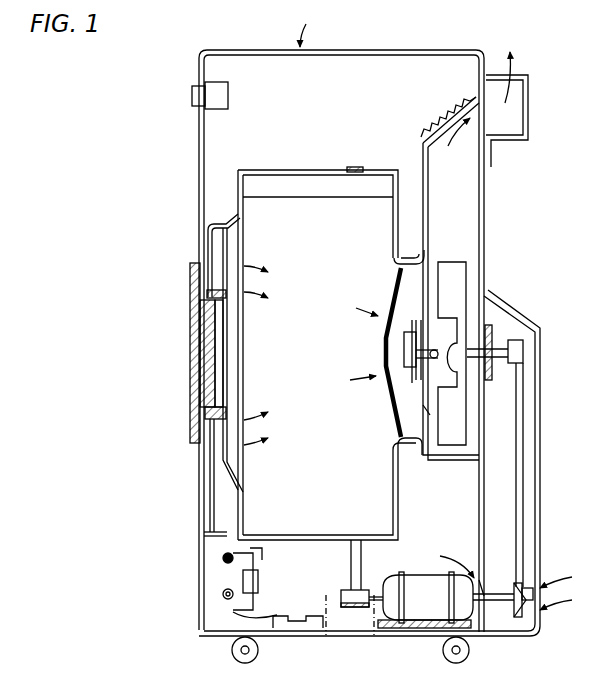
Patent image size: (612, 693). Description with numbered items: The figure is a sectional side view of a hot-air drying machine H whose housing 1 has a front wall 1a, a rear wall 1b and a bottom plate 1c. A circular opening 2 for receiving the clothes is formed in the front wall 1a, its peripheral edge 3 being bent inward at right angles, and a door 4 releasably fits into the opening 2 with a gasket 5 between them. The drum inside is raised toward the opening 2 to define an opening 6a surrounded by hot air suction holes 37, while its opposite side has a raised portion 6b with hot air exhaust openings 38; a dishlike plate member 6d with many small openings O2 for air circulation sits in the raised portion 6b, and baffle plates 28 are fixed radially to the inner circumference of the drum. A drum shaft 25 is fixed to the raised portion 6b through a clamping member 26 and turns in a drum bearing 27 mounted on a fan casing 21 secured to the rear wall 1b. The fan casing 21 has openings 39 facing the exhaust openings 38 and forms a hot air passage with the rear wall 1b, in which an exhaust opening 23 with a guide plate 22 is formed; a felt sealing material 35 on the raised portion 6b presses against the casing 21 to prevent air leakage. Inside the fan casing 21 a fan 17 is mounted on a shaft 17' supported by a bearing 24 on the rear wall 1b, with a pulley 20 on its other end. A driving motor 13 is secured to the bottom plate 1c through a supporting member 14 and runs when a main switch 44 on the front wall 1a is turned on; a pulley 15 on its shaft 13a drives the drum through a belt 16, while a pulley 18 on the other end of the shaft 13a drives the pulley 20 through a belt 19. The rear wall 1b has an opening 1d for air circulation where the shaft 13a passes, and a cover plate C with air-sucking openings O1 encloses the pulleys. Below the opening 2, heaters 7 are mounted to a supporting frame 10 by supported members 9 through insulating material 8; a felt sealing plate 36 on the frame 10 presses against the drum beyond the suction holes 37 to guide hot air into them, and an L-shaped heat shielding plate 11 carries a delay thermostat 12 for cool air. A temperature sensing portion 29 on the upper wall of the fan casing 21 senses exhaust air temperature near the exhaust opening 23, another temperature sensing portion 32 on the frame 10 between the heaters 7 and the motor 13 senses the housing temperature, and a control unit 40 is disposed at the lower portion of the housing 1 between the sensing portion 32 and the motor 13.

The housing 1 is at (358, 52).
The front wall 1a is at (200, 148).
The rear wall 1b is at (484, 200).
The bottom plate 1c is at (480, 637).
The opening 1d is at (491, 588).
The circular opening 2 is at (217, 347).
The peripheral edge 3 is at (195, 305).
The door 4 is at (192, 383).
The gasket 5 is at (212, 412).
The opening of drum 6a is at (232, 360).
The raised portion 6b is at (400, 458).
The plate member 6d is at (387, 327).
The heaters 7 is at (232, 612).
The insulating material 8 is at (226, 594).
The supported members 9 is at (226, 560).
The supporting frame 10 is at (222, 532).
The heat shielding plate 11 is at (258, 557).
The delay thermostat 12 is at (262, 585).
The driving motor 13 is at (428, 603).
The motor shaft 13a is at (498, 607).
The supporting member 14 is at (403, 628).
The pulley 15 is at (360, 610).
The belt 16 is at (356, 560).
The fan 17 is at (510, 353).
The shaft 17' is at (529, 359).
The pulley 18 is at (522, 604).
The belt 19 is at (520, 470).
The pulley 20 is at (522, 348).
The fan casing 21 is at (428, 172).
The guide plate 22 is at (530, 90).
The exhaust opening 23 is at (486, 116).
The bearing 24 is at (488, 340).
The drum shaft 25 is at (406, 352).
The clamping member 26 is at (418, 312).
The drum bearing 27 is at (430, 362).
The baffle plates 28 is at (375, 185).
The temperature sensing portion 29 is at (440, 108).
The temperature sensing portion 32 is at (298, 630).
The sealing material 35 is at (428, 232).
The sealing plate 36 is at (224, 226).
The hot air suction holes 37 is at (222, 452).
The hot air exhaust openings 38 is at (416, 393).
The openings 39 is at (426, 410).
The control unit 40 is at (337, 618).
The main switch 44 is at (213, 97).
The cover plate C is at (540, 520).
The hot-air drying machine H is at (312, 24).
The openings O1 is at (570, 591).
The small openings O2 is at (402, 342).